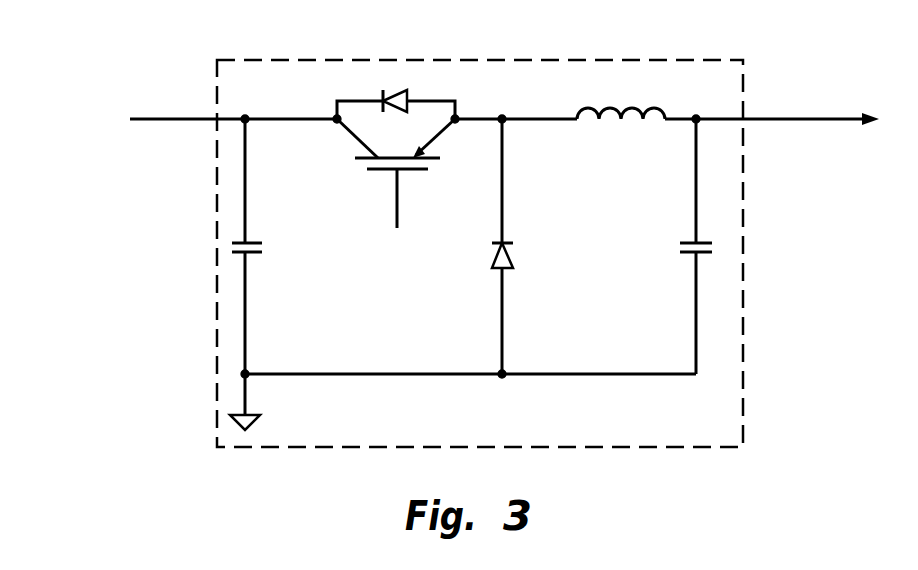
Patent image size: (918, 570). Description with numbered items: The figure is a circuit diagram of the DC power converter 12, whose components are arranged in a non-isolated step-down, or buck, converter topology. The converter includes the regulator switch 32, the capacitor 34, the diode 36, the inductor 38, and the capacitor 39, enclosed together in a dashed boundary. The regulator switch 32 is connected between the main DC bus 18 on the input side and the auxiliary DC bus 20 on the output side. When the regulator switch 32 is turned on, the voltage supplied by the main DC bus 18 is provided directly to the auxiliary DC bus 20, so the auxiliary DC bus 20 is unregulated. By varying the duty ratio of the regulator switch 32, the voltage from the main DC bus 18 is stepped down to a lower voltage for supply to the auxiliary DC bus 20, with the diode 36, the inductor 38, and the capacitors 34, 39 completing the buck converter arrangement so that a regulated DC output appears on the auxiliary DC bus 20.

The DC power converter 12 is at (728, 59).
The main DC bus 18 is at (193, 118).
The auxiliary DC bus 20 is at (822, 121).
The regulator switch 32 is at (440, 101).
The capacitor 34 is at (250, 242).
The diode 36 is at (510, 250).
The inductor 38 is at (632, 109).
The capacitor 39 is at (688, 242).